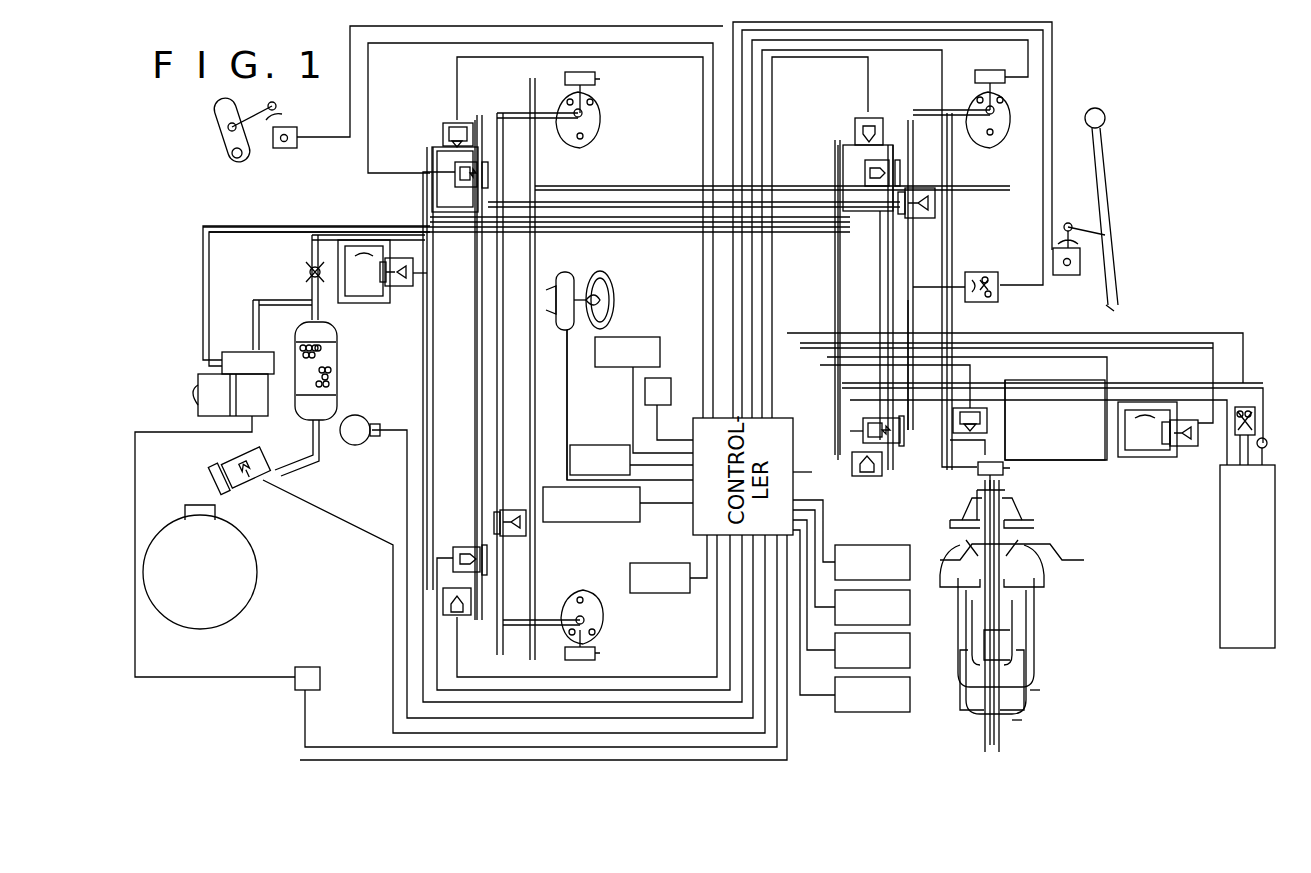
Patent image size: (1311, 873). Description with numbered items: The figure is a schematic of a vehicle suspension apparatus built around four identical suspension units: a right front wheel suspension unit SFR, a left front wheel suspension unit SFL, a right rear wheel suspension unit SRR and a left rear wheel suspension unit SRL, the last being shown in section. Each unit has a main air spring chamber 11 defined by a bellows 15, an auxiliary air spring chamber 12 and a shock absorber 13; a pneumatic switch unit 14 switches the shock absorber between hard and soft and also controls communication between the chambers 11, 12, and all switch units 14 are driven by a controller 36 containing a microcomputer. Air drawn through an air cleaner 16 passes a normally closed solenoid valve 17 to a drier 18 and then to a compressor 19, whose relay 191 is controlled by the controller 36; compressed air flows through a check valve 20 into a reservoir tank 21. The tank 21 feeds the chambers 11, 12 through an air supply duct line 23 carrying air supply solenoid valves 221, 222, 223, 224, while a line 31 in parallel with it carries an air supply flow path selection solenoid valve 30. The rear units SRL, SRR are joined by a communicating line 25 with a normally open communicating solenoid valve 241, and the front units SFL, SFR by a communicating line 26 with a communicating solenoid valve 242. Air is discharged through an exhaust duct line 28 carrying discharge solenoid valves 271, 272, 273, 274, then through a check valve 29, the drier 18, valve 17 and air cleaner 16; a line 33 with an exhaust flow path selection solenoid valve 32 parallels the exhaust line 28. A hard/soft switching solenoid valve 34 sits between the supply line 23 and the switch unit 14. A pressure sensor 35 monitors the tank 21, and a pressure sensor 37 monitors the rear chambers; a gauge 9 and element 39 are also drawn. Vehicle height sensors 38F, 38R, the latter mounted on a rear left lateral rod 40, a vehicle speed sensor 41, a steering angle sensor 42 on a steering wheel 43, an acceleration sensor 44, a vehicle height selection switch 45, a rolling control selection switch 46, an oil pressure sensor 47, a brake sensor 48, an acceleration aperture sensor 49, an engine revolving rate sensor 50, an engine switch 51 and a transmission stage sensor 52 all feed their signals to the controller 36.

The pressure gauge 9 is at (357, 445).
The main air spring chamber 11 is at (1032, 654).
The auxiliary air spring chamber 12 is at (1040, 561).
The shock absorber 13 is at (1021, 726).
The pneumatic switch unit 14 is at (596, 84).
The bellows 15 is at (1030, 696).
The air cleaner 16 is at (256, 580).
The solenoid valve 17 is at (270, 470).
The drier 18 is at (338, 372).
The compressor 19 is at (202, 376).
The check valve 20 is at (1266, 440).
The reservoir tank 21 is at (1220, 596).
The air supply duct line 23 is at (1080, 396).
The communicating line 25 is at (922, 330).
The communicating line 26 is at (494, 394).
The exhaust duct line 28 is at (866, 207).
The check valve 29 is at (312, 270).
The air supply flow path selection solenoid valve 30 is at (1188, 446).
The line 31 is at (1138, 456).
The exhaust flow path selection solenoid valve 32 is at (404, 288).
The line 33 is at (360, 302).
The hard/soft switching solenoid valve 34 is at (982, 454).
The pressure sensor 35 is at (1248, 406).
The controller 36 is at (800, 478).
The pressure sensor 37 is at (991, 301).
The vehicle height sensor 38F is at (297, 126).
The vehicle height sensor 38R is at (1070, 276).
The front brake lever 39 is at (224, 134).
The rear left lateral rod 40 is at (1108, 166).
The vehicle speed sensor 41 is at (572, 330).
The steering angle sensor 42 is at (574, 270).
The steering wheel 43 is at (606, 288).
The acceleration sensor 44 is at (645, 390).
The vehicle height selection switch 45 is at (596, 444).
The rolling control selection switch 46 is at (615, 522).
The oil pressure sensor 47 is at (642, 337).
The brake sensor 48 is at (672, 593).
The acceleration aperture sensor 49 is at (874, 545).
The engine revolving rate sensor 50 is at (908, 591).
The engine switch 51 is at (840, 668).
The transmission stage sensor 52 is at (836, 712).
The relay 191 is at (307, 666).
The air supply solenoid valve 221 is at (864, 485).
The air supply solenoid valve 222 is at (852, 118).
The air supply solenoid valve 223 is at (462, 615).
The air supply solenoid valve 224 is at (438, 124).
The communicating solenoid valve 241 is at (925, 216).
The communicating solenoid valve 242 is at (525, 538).
The discharge solenoid valve 271 is at (901, 473).
The discharge solenoid valve 272 is at (905, 172).
The discharge solenoid valve 273 is at (454, 546).
The discharge solenoid valve 274 is at (455, 176).
The left front wheel suspension unit SFL is at (598, 604).
The right front wheel suspension unit SFR is at (600, 110).
The left rear wheel suspension unit SRL is at (1035, 523).
The right rear wheel suspension unit SRR is at (1010, 140).